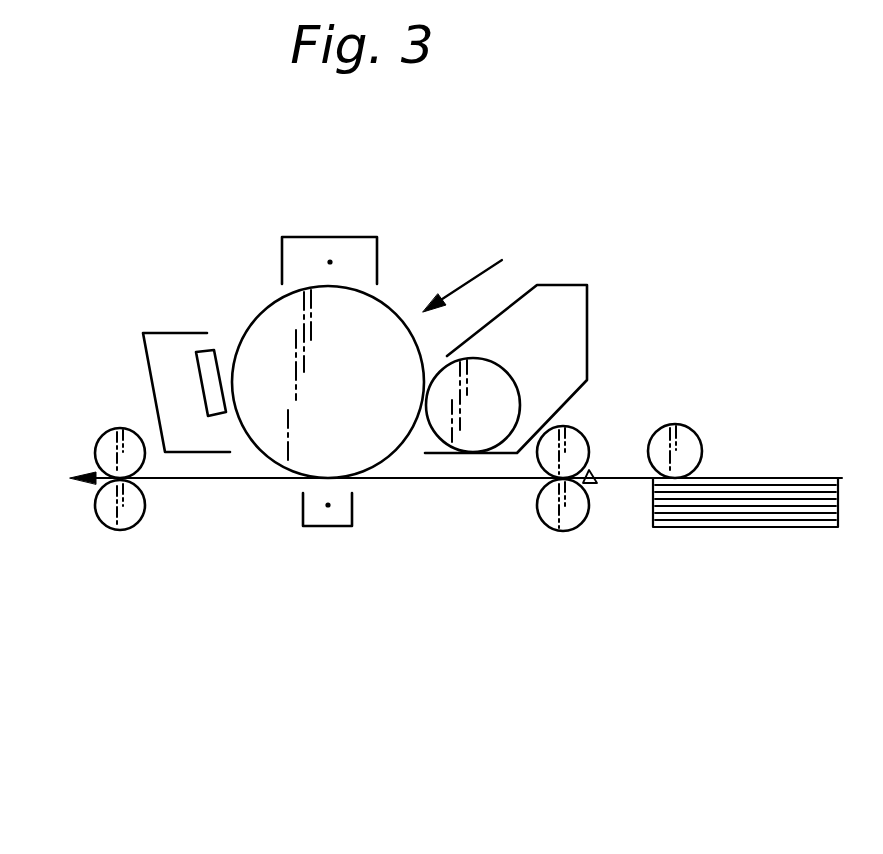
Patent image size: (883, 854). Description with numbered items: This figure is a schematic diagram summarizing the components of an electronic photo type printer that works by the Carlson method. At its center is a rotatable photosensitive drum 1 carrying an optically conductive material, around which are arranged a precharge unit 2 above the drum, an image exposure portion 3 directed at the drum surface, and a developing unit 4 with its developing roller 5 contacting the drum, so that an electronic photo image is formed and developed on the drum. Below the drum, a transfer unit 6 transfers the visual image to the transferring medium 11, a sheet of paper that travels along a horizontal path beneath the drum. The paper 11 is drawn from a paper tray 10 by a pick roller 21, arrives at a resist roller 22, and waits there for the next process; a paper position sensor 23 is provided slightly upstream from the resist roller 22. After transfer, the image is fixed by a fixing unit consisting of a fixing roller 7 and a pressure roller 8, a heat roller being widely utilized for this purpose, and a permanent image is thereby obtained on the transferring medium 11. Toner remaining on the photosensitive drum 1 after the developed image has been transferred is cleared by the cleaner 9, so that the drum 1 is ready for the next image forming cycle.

The photosensitive drum 1 is at (264, 313).
The precharge unit 2 is at (311, 237).
The image exposure portion 3 is at (483, 270).
The developing unit 4 is at (587, 320).
The developing roller 5 is at (519, 385).
The transfer unit 6 is at (352, 507).
The fixing roller 7 is at (121, 428).
The pressure roller 8 is at (143, 497).
The cleaner 9 is at (198, 376).
The paper tray 10 is at (838, 492).
The transferring medium 11 is at (237, 480).
The pick roller 21 is at (698, 432).
The resist roller 22 is at (588, 442).
The paper position sensor 23 is at (593, 486).